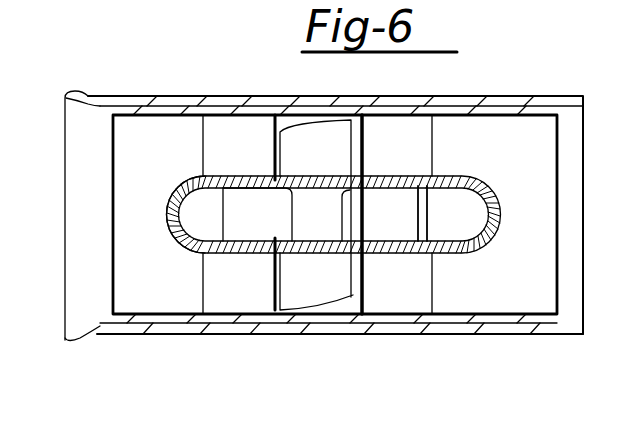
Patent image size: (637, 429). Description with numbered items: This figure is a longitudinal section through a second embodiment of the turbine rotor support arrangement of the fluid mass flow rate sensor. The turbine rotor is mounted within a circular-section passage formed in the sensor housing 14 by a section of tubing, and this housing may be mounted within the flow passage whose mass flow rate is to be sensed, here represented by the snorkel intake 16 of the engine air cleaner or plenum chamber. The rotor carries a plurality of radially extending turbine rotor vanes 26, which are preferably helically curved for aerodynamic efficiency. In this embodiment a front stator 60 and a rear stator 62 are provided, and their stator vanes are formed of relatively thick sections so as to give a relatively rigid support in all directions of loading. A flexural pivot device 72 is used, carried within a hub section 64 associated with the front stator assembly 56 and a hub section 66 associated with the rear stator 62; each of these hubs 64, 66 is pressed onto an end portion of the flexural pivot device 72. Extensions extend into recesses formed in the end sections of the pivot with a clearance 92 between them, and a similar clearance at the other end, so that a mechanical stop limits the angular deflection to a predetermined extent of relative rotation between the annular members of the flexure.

The sensor housing 14 is at (509, 110).
The snorkel intake 16 is at (457, 97).
The front stator assembly 56 is at (110, 361).
The front stator 60 is at (222, 294).
The rear stator 62 is at (406, 283).
The hub section 64 is at (175, 243).
The hub section 66 is at (445, 176).
The flexural pivot device 72 is at (214, 208).
The clearance 92 is at (310, 218).
The turbine rotor vanes 26 is at (318, 298).